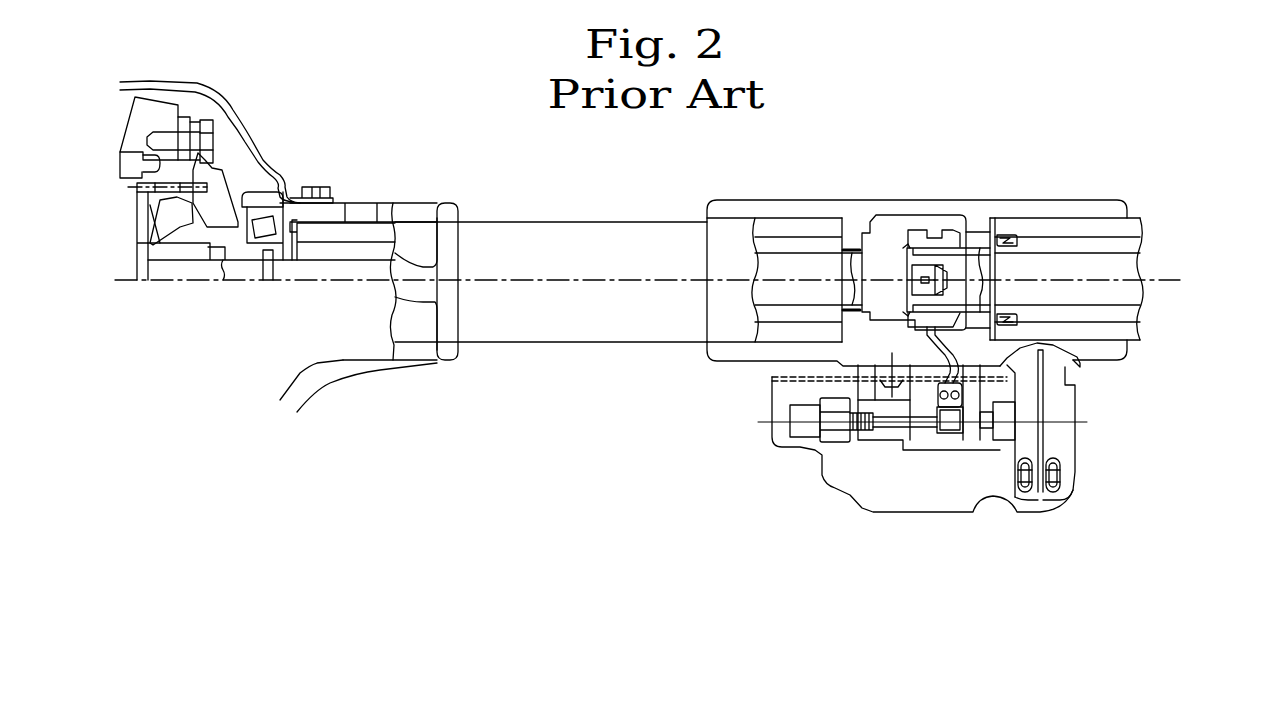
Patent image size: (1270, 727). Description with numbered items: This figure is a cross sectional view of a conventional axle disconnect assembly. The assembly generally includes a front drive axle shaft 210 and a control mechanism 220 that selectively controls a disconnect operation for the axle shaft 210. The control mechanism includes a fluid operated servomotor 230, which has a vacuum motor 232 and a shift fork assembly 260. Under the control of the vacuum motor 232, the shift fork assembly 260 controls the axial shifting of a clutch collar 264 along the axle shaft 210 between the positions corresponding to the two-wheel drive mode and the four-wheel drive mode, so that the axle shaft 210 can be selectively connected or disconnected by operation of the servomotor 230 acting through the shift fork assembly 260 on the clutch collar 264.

The front drive axle shaft 210 is at (1120, 265).
The control mechanism 220 is at (1100, 390).
The fluid operated servomotor 230 is at (1100, 458).
The vacuum motor 232 is at (1017, 468).
The shift fork assembly 260 is at (953, 432).
The clutch collar 264 is at (948, 237).